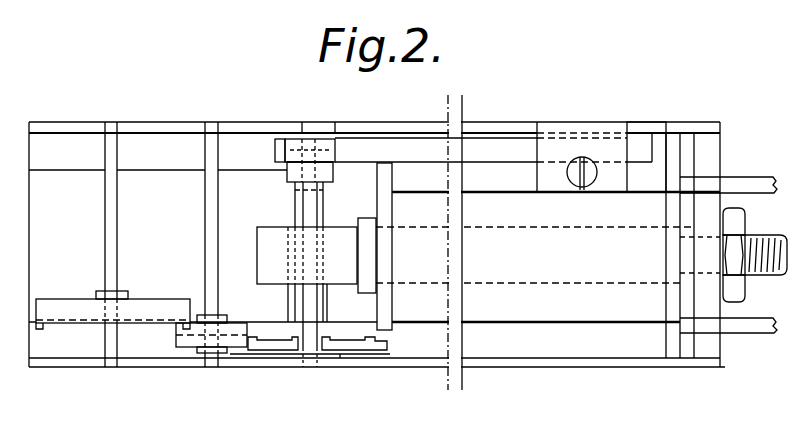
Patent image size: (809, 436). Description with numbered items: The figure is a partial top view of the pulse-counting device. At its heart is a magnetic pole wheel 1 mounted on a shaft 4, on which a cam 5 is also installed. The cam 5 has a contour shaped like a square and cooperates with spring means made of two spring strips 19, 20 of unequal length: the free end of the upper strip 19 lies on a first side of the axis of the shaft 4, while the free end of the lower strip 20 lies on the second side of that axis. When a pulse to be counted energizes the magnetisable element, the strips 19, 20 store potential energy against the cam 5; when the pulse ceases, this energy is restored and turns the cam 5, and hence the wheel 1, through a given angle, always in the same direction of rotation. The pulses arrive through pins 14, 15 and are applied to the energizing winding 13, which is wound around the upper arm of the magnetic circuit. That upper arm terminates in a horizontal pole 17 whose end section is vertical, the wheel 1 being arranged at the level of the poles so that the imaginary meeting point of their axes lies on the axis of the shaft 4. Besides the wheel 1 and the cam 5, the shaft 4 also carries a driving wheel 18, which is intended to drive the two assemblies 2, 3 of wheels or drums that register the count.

The magnetic pole wheel 1 is at (276, 272).
The assembly of wheels or drums 2 is at (213, 370).
The assembly of wheels or drums 3 is at (112, 370).
The shaft 4 is at (311, 211).
The cam 5 is at (290, 176).
The energizing winding 13 is at (648, 198).
The pin 14 is at (737, 326).
The pin 15 is at (732, 186).
The horizontal pole 17 is at (360, 274).
The driving wheel 18 is at (357, 350).
The upper spring strip 19 is at (367, 152).
The lower spring strip 20 is at (283, 145).